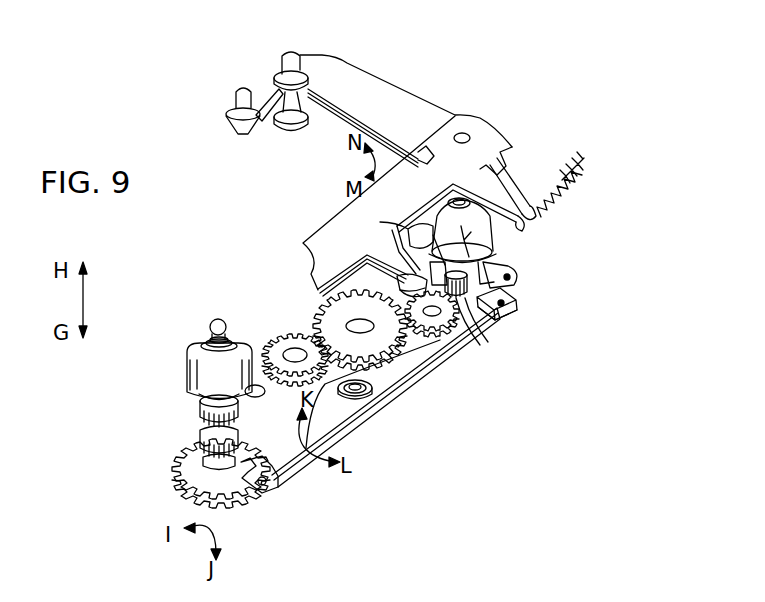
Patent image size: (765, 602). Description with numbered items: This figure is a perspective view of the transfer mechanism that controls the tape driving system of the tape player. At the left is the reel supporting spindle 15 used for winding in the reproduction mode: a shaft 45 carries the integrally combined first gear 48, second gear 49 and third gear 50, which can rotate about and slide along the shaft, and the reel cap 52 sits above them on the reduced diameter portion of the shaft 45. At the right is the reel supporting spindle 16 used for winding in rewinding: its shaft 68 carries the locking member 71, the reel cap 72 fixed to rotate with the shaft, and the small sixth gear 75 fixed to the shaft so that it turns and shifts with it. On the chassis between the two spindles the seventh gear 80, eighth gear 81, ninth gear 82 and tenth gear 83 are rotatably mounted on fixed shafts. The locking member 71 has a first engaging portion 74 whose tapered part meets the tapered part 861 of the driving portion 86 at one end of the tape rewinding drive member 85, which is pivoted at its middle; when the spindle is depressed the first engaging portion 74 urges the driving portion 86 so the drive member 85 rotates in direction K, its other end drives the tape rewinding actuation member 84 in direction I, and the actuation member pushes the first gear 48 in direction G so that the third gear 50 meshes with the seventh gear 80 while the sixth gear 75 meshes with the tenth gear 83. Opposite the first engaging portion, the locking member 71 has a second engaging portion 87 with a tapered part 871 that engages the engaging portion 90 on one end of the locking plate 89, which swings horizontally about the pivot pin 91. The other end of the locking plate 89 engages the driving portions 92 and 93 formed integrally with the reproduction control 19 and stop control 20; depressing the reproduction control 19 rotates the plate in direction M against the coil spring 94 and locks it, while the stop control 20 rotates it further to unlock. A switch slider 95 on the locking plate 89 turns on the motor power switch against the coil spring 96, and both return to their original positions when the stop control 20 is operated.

The reel supporting spindle 15 is at (165, 370).
The reel supporting spindle 16 is at (503, 238).
The reproduction control 19 is at (300, 56).
The stop control 20 is at (232, 103).
The shaft 45 is at (200, 430).
The first gear 48 is at (180, 470).
The second gear 49 is at (197, 436).
The third gear 50 is at (200, 407).
The reel cap 52 is at (195, 350).
The shaft 68 is at (490, 323).
The locking member 71 is at (497, 258).
The reel cap 72 is at (433, 214).
The first engaging portion 74 is at (490, 283).
The sixth gear 75 is at (463, 292).
The seventh gear 80 is at (262, 375).
The eighth gear 81 is at (270, 343).
The ninth gear 82 is at (328, 312).
The tenth gear 83 is at (438, 326).
The tape rewinding actuation member 84 is at (273, 494).
The tape rewinding drive member 85 is at (392, 398).
The driving portion 86 is at (515, 320).
The tapered part 861 is at (516, 295).
The second engaging portion 87 is at (391, 243).
The tapered part 871 is at (366, 255).
The locking plate 89 is at (338, 220).
The engaging portion 90 is at (408, 290).
The pivot pin 91 is at (472, 136).
The driving portion 92 is at (305, 106).
The driving portion 93 is at (243, 130).
The coil spring 94 is at (565, 195).
The switch slider 95 is at (512, 172).
The coil spring 96 is at (566, 158).